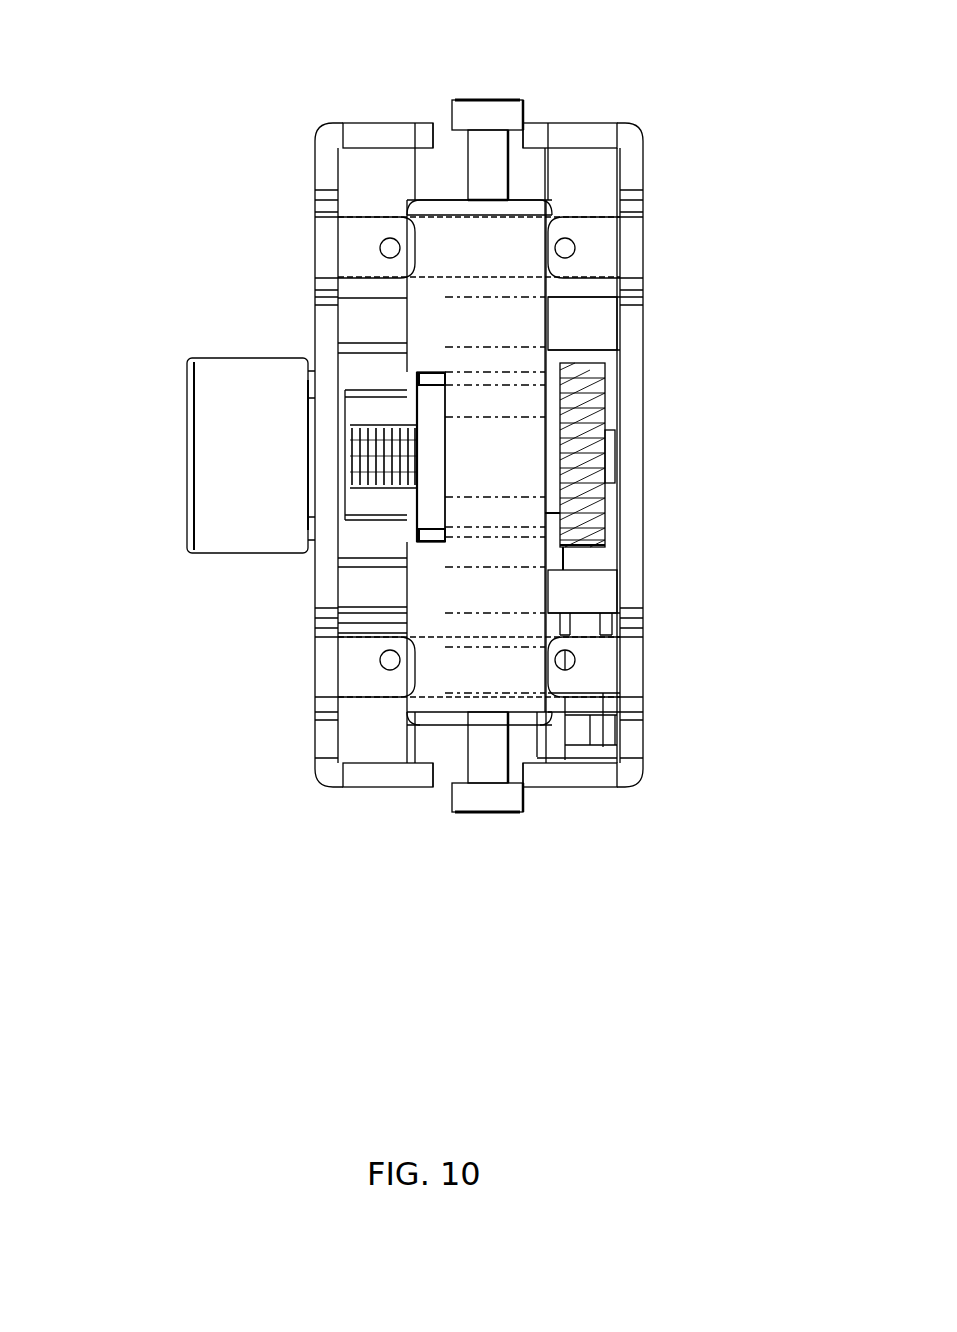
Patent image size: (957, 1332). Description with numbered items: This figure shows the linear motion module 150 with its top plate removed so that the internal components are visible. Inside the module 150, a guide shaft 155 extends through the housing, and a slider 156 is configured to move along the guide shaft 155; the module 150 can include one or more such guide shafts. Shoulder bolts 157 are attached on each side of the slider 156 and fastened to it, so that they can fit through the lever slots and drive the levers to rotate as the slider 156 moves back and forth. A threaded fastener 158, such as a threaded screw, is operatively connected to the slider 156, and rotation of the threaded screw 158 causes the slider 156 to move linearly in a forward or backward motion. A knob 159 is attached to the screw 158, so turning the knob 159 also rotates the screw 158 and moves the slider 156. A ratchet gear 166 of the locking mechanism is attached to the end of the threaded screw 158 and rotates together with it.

The linear motion module 150 is at (648, 853).
The guide shaft 155 is at (580, 330).
The slider 156 is at (455, 683).
The shoulder bolts 157 is at (497, 125).
The threaded fastener 158 is at (385, 425).
The knob 159 is at (252, 470).
The ratchet gear 166 is at (580, 420).